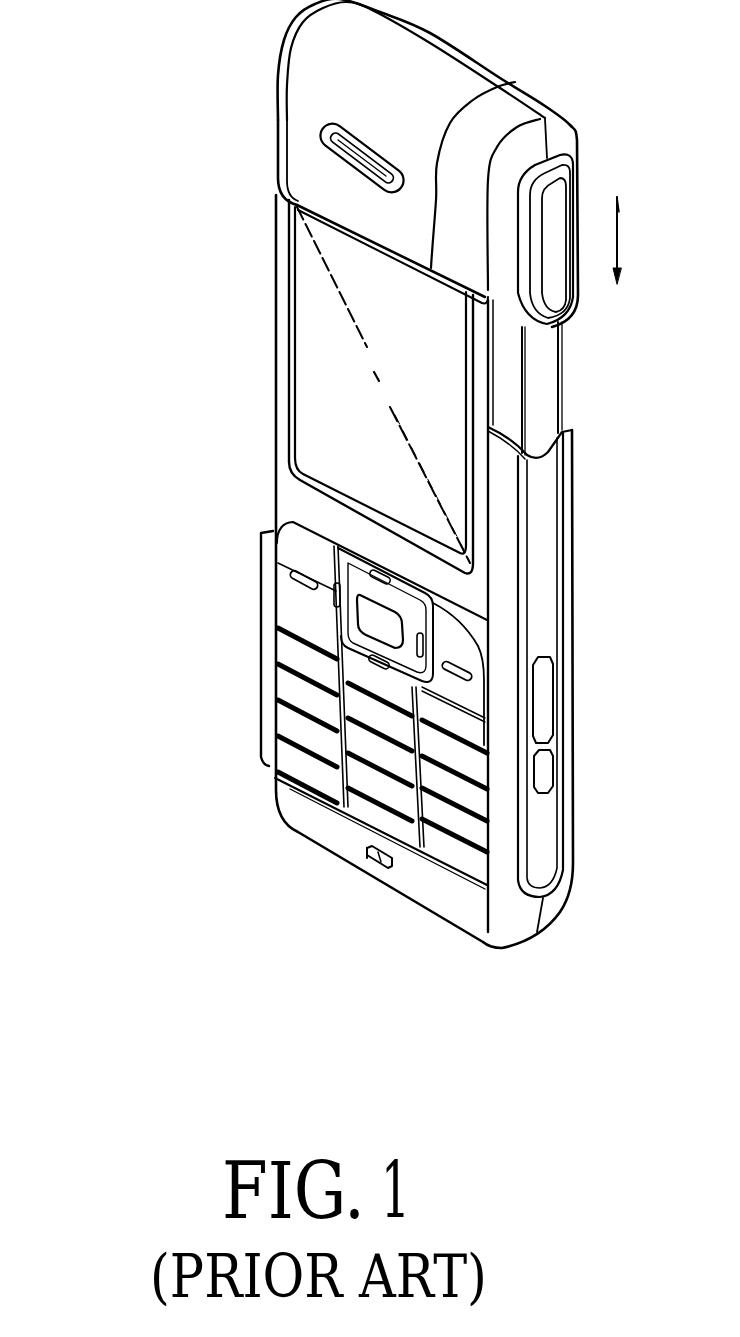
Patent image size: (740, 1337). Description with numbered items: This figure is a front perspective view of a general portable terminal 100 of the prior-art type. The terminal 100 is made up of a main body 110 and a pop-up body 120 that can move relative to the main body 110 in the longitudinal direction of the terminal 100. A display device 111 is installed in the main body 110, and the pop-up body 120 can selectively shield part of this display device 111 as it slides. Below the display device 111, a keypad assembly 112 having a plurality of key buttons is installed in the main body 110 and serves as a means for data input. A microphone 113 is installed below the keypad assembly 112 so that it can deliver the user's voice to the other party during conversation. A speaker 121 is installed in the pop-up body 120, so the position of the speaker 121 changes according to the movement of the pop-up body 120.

The portable terminal 100 is at (342, 493).
The main body 110 is at (284, 495).
The display device 111 is at (317, 378).
The keypad assembly 112 is at (260, 654).
The microphone 113 is at (371, 866).
The pop-up body 120 is at (370, 163).
The speaker 121 is at (347, 163).